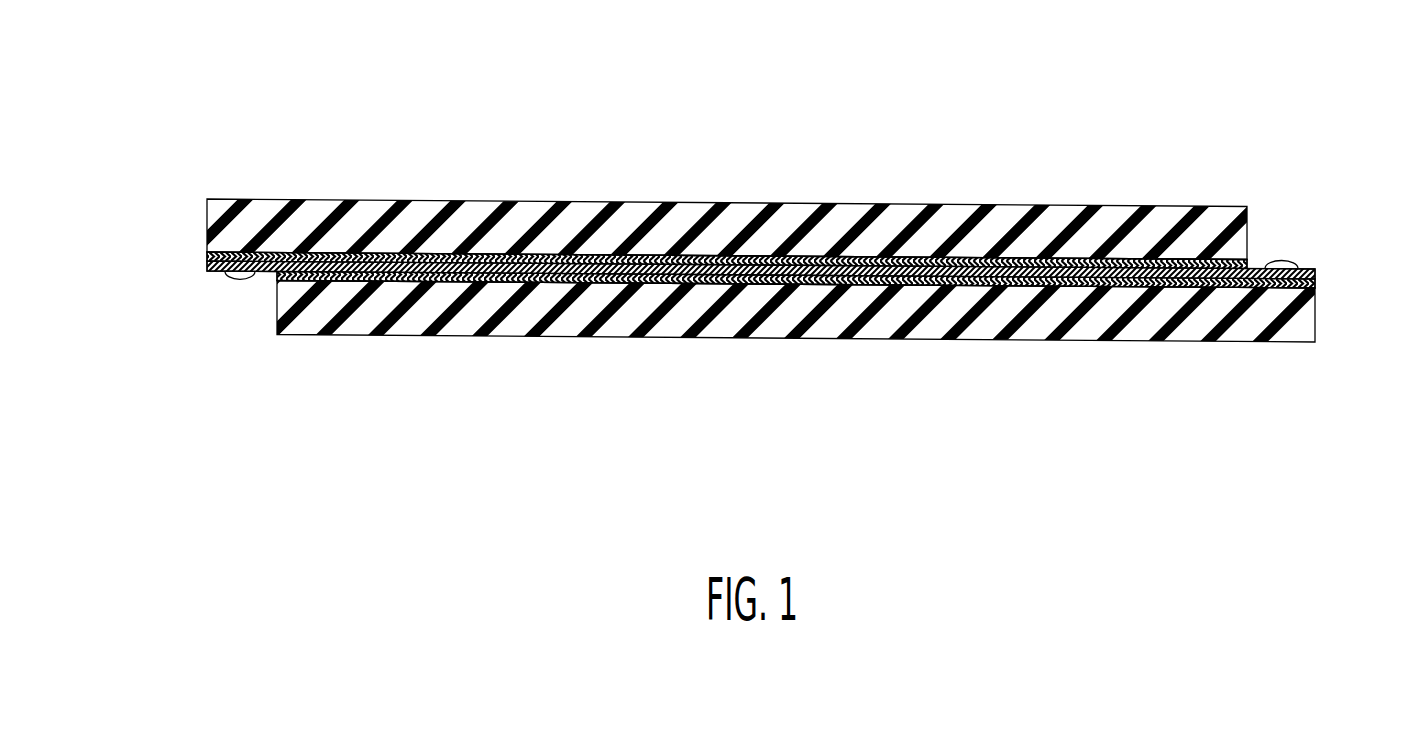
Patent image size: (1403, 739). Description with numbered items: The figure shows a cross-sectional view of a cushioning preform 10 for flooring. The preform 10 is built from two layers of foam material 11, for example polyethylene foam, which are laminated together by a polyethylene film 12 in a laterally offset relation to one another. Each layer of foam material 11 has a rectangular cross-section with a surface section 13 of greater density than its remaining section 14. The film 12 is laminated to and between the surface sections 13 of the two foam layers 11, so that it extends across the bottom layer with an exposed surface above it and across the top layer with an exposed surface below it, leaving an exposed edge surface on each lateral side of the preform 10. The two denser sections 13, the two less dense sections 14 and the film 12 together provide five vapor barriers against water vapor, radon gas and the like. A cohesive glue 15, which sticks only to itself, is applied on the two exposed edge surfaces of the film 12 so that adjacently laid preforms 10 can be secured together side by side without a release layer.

The cushioning preform 10 is at (772, 120).
The layer of foam material 11 is at (382, 207).
The polyethylene film 12 is at (270, 266).
The surface section 13 is at (548, 262).
The remaining section 14 is at (913, 216).
The cohesive glue 15 is at (1280, 260).